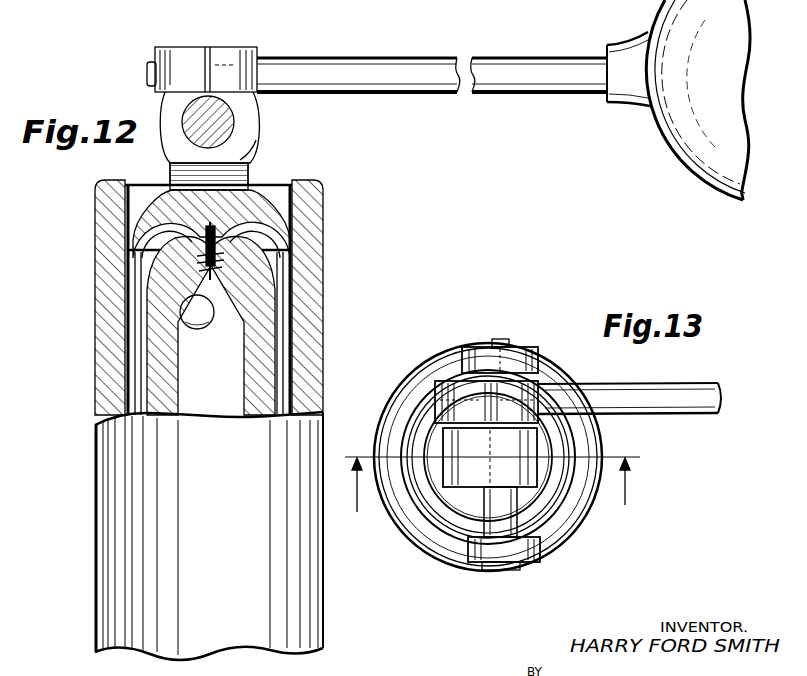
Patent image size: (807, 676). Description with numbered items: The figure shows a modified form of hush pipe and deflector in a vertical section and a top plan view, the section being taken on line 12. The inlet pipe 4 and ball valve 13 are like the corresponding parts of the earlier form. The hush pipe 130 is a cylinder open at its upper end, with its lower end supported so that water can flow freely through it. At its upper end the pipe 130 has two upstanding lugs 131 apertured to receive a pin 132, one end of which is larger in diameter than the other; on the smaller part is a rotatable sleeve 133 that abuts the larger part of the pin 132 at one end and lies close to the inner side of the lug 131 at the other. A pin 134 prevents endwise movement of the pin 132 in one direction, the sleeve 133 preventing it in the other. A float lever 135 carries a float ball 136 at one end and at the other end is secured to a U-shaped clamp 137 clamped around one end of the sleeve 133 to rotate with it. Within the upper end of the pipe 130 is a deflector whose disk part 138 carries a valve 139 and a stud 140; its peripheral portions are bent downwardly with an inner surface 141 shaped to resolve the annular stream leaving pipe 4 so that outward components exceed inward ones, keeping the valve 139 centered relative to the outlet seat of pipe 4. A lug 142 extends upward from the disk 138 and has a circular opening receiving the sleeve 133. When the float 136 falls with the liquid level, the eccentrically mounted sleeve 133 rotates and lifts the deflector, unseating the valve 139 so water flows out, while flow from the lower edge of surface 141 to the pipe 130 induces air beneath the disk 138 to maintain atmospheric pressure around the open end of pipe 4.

In FIG. 12, the inlet pipe 4 is at (160, 358).
In FIG. 13, the section line 12 is at (492, 496).
In FIG. 12, the ball valve 13 is at (203, 326).
In FIG. 12, the hush pipe 130 is at (108, 320).
In FIG. 13, the hush pipe 130 is at (425, 378).
In FIG. 13, the upstanding lugs 131 is at (470, 347).
In FIG. 12, the pin 132 is at (234, 116).
In FIG. 13, the pin 132 is at (500, 571).
In FIG. 12, the sleeve 133 is at (187, 110).
In FIG. 13, the sleeve 133 is at (473, 490).
In FIG. 13, the pin 134 is at (507, 339).
In FIG. 12, the float lever 135 is at (393, 70).
In FIG. 13, the float lever 135 is at (656, 398).
In FIG. 12, the float ball 136 is at (693, 103).
In FIG. 12, the U-shaped clamp 137 is at (225, 57).
In FIG. 13, the U-shaped clamp 137 is at (528, 402).
In FIG. 12, the disk part 138 is at (270, 197).
In FIG. 13, the disk part 138 is at (425, 437).
In FIG. 12, the valve 139 is at (216, 250).
In FIG. 12, the stud 140 is at (224, 270).
In FIG. 12, the inner surface 141 is at (288, 198).
In FIG. 12, the lug 142 is at (256, 150).
In FIG. 13, the lug 142 is at (522, 468).